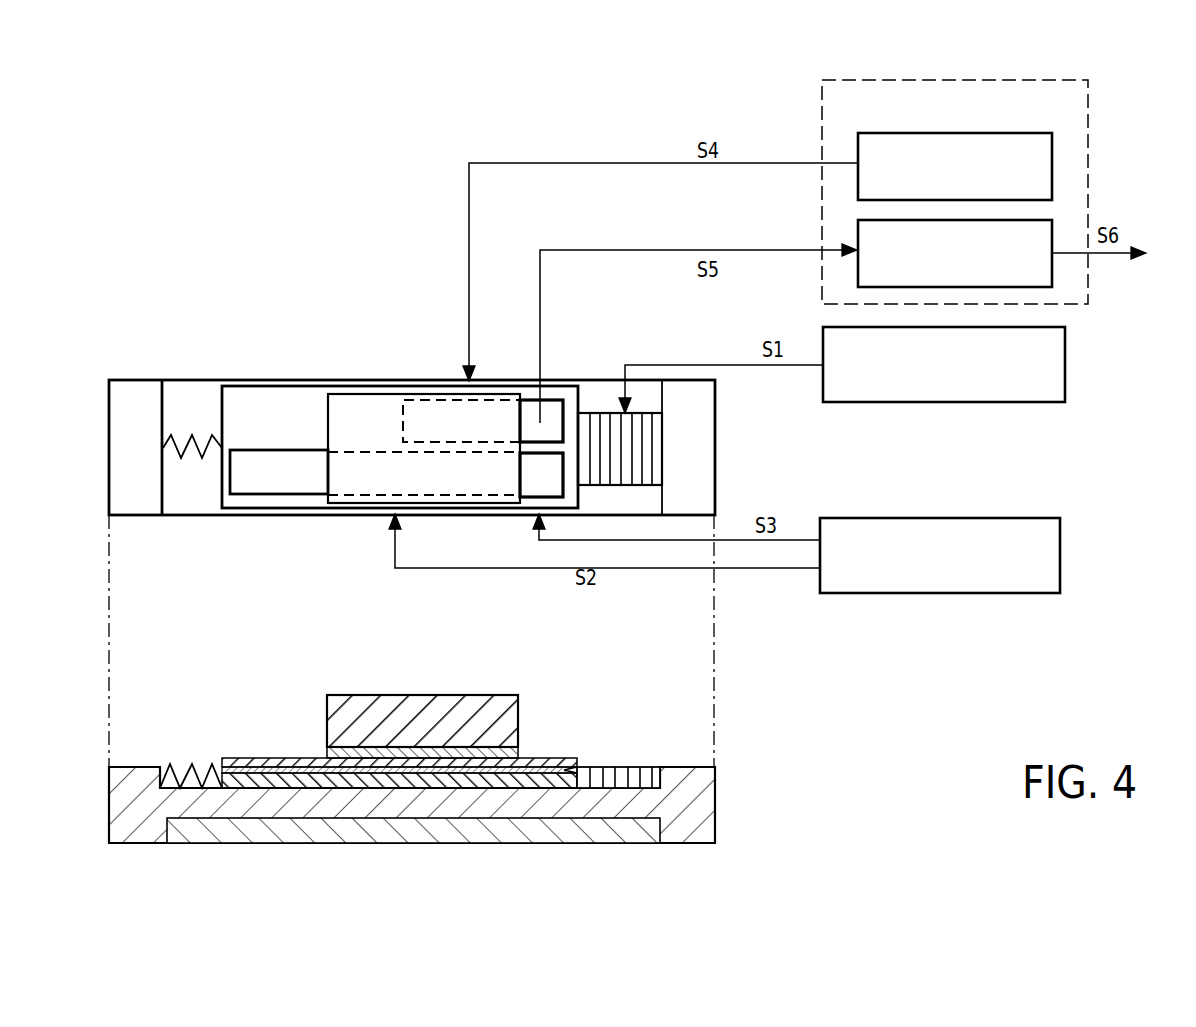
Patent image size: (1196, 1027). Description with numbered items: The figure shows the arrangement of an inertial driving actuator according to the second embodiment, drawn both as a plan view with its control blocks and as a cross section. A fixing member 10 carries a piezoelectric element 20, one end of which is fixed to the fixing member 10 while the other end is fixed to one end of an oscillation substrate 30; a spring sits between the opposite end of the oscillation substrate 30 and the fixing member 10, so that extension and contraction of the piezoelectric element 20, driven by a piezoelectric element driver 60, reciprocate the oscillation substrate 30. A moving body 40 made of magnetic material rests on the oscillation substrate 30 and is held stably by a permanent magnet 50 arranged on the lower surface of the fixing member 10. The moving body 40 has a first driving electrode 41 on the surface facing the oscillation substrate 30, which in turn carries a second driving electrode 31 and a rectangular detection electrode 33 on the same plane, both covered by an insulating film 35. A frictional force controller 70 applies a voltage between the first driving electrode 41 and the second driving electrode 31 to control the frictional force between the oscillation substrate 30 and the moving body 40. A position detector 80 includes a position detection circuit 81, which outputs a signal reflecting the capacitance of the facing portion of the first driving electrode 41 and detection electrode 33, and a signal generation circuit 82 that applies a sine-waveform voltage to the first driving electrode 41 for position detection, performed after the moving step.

The fixing member 10 is at (135, 393).
The piezoelectric element 20 is at (633, 448).
The oscillation substrate 30 is at (233, 393).
The second driving electrode 31 is at (276, 480).
The detection electrode 33 is at (553, 412).
The insulating film 35 is at (238, 762).
The moving body 40 is at (388, 695).
The first driving electrode 41 is at (315, 400).
The permanent magnet 50 is at (241, 835).
The piezoelectric element driver 60 is at (1066, 360).
The frictional force controller 70 is at (1061, 552).
The position detector 80 is at (1046, 80).
The position detection circuit 81 is at (1052, 240).
The signal generation circuit 82 is at (1052, 163).